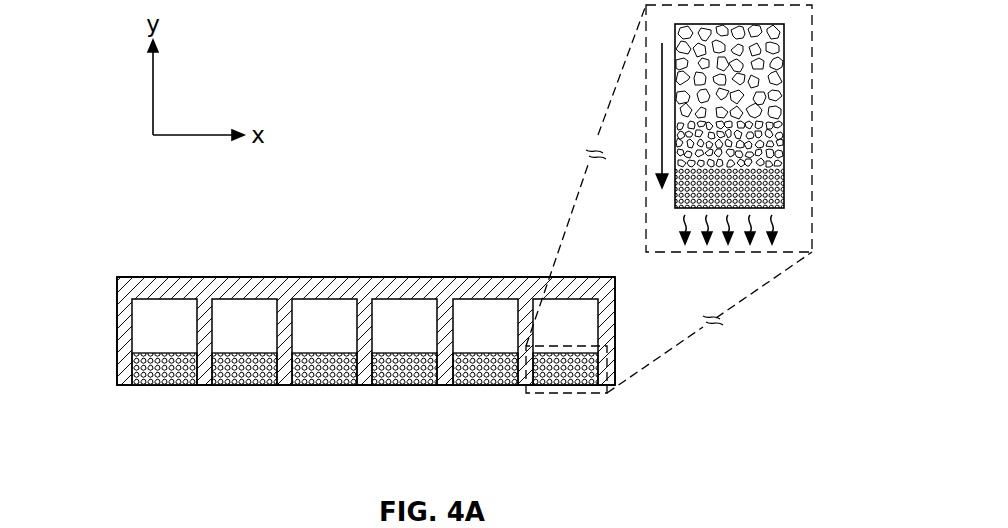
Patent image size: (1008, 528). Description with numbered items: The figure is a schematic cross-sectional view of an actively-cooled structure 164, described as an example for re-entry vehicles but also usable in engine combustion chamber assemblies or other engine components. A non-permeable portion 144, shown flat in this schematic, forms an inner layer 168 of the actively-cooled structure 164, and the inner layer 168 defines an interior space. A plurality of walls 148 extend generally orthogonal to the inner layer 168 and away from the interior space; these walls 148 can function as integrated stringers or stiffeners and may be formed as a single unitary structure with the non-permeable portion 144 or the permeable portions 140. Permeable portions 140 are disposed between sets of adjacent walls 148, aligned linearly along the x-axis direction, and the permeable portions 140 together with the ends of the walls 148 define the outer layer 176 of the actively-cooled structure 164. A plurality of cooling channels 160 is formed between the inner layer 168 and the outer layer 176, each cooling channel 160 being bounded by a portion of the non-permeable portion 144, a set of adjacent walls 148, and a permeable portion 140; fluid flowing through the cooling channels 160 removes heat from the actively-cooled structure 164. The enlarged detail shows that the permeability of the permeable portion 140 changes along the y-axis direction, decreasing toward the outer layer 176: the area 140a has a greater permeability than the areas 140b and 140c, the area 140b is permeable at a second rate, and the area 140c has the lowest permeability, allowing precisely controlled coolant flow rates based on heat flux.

The actively-cooled structure 164 is at (108, 144).
The non-permeable portion 144 is at (318, 287).
The inner layer 168 is at (386, 258).
The plurality of walls 148 is at (122, 315).
The cooling channels 160 is at (587, 338).
The permeable portion 140 is at (361, 402).
The outer layer 176 is at (274, 397).
The area of the permeable portion 140a is at (776, 65).
The area of the permeable portion 140b is at (774, 143).
The area of the permeable portion 140c is at (786, 197).